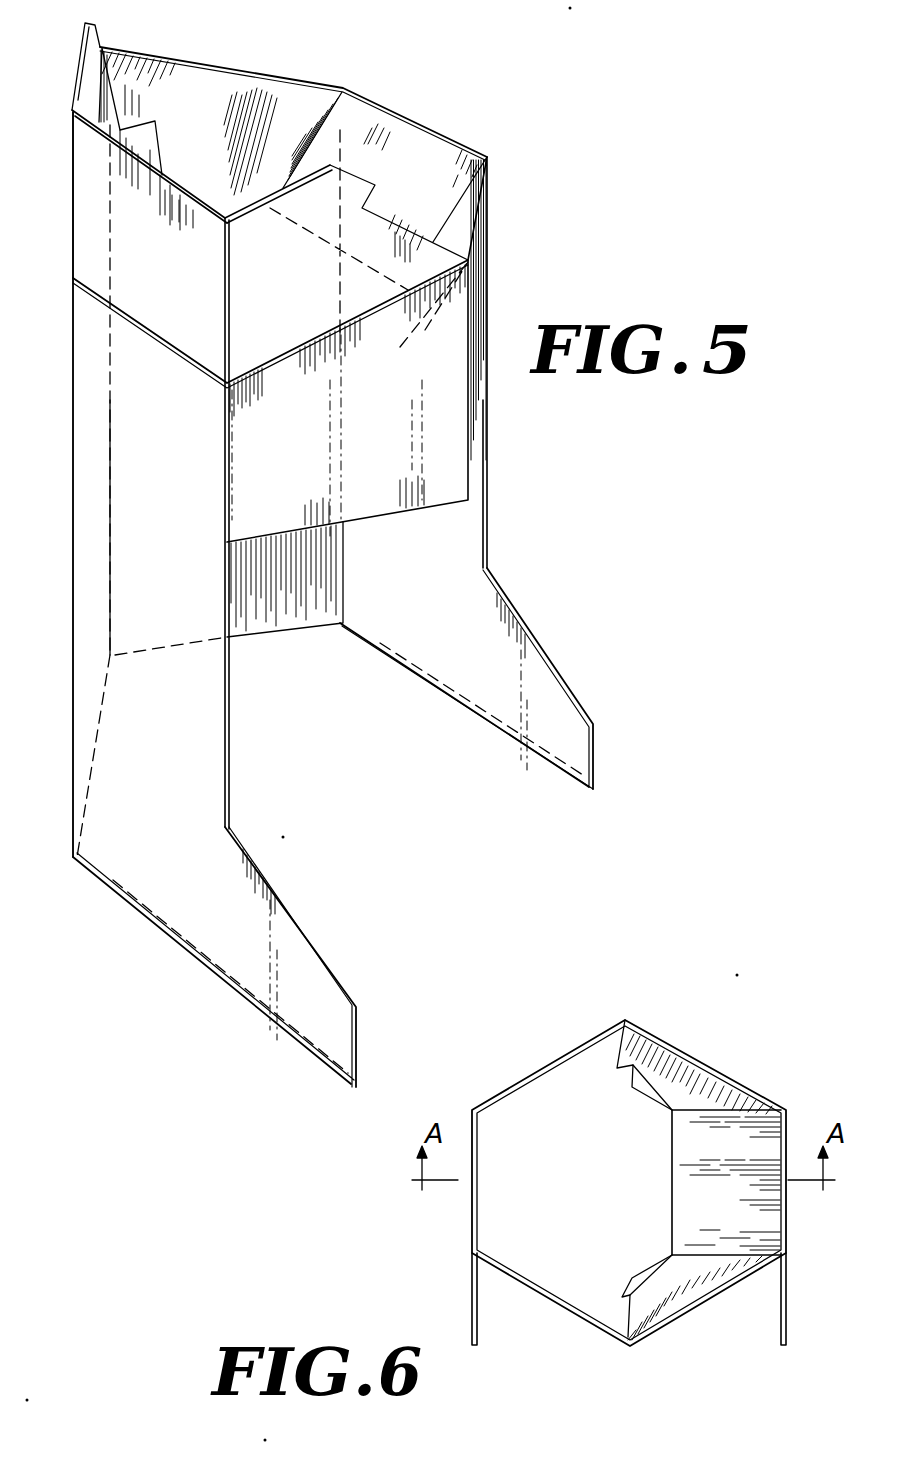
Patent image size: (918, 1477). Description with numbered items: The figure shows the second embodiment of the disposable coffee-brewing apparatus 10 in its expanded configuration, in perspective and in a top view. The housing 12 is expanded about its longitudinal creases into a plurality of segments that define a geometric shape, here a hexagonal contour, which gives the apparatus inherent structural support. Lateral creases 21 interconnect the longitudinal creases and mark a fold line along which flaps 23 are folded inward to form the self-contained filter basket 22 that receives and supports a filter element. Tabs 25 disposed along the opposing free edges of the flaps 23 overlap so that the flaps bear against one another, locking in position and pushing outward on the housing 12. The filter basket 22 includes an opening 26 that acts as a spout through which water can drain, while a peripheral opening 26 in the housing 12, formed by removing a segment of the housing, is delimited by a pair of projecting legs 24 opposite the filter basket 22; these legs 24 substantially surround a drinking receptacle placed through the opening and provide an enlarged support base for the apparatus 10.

In FIG. 5, the disposable coffee-brewing apparatus 10 is at (62, 596).
In FIG. 6, the disposable coffee-brewing apparatus 10 is at (496, 1082).
In FIG. 5, the housing 12 is at (155, 412).
In FIG. 5, the lateral creases 21 is at (100, 300).
In FIG. 5, the filter basket 22 is at (432, 177).
In FIG. 6, the filter basket 22 is at (752, 1140).
In FIG. 5, the flaps 23 is at (128, 212).
In FIG. 5, the projecting legs 24 is at (468, 652).
In FIG. 6, the projecting legs 24 is at (470, 1308).
In FIG. 5, the tabs 25 is at (103, 45).
In FIG. 6, the tabs 25 is at (622, 1055).
In FIG. 5, the opening 26 is at (414, 798).
In FIG. 6, the opening 26 is at (636, 1128).